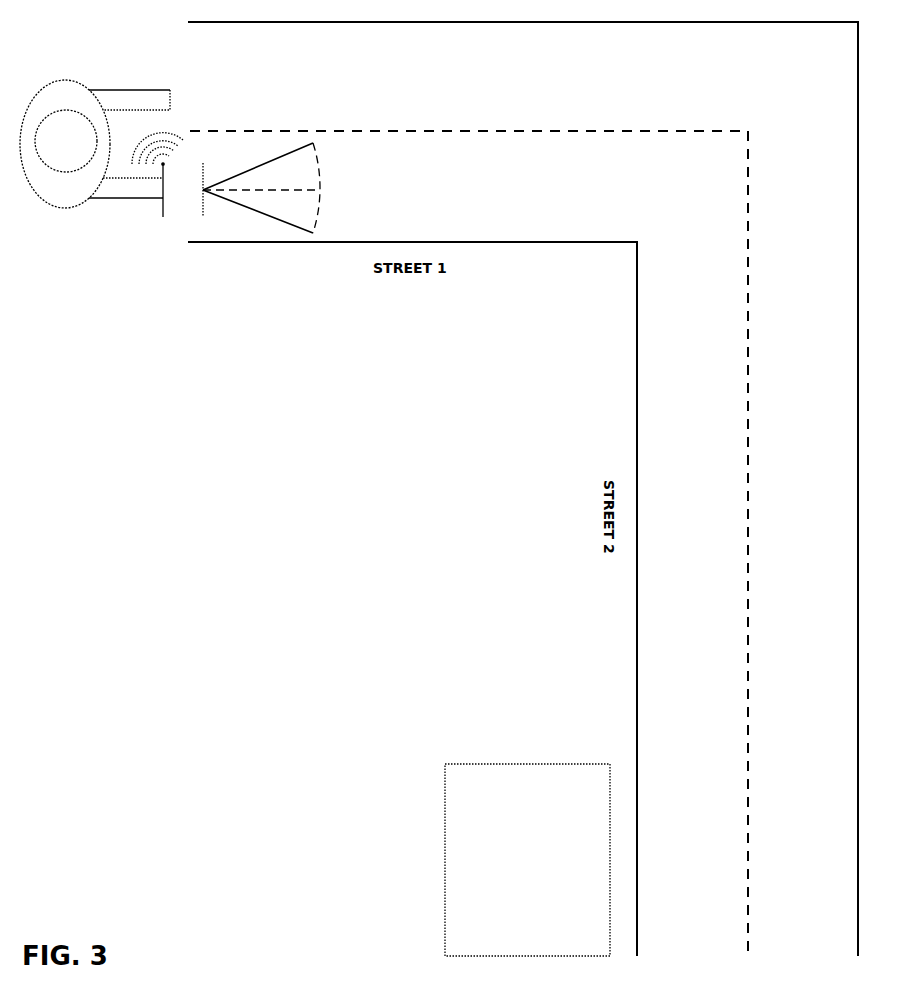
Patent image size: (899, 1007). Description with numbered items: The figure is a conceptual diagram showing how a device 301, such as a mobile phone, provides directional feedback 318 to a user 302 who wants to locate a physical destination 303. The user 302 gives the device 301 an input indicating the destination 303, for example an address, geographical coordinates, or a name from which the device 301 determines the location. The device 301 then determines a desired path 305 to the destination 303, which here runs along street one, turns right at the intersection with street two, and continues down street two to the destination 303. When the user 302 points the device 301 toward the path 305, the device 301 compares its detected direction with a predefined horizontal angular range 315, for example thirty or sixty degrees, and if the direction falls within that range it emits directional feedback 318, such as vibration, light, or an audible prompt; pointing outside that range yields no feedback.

The device 301 is at (160, 220).
The user 302 is at (63, 209).
The destination 303 is at (527, 860).
The desired path 305 is at (488, 133).
The predefined horizontal angular range 315 is at (320, 200).
The directional feedback 318 is at (167, 113).